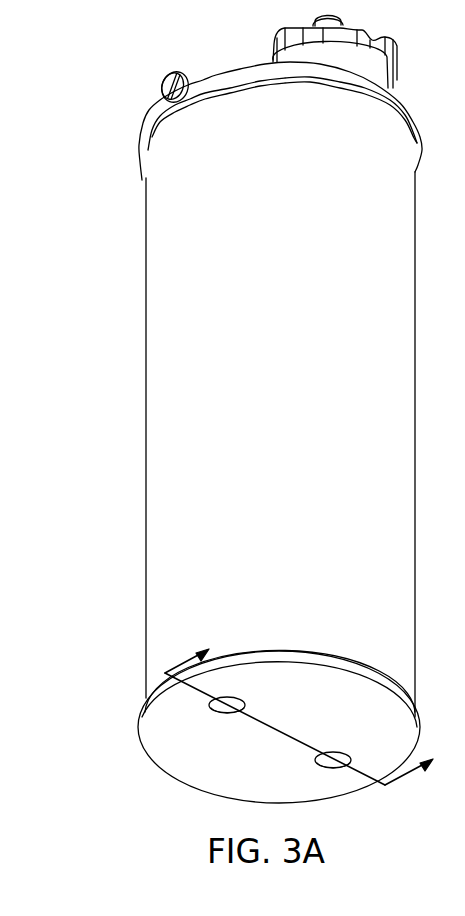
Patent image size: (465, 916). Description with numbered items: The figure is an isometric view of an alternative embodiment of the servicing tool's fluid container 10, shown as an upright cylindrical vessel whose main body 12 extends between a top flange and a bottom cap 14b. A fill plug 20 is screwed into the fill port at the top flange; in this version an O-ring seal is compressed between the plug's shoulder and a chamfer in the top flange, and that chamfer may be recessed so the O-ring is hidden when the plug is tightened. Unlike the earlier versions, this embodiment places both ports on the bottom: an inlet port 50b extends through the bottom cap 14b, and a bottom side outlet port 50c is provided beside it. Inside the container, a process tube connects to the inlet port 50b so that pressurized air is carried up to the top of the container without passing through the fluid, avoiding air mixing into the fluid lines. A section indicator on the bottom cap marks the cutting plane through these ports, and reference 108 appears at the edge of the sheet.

The fluid container 10 is at (150, 51).
The cylindrical body 12 is at (178, 355).
The fill plug 20 is at (372, 70).
The bottom cap 14b is at (140, 718).
The inlet port 50b is at (212, 708).
The bottom side outlet port 50c is at (330, 763).
The reference element 108 is at (464, 880).